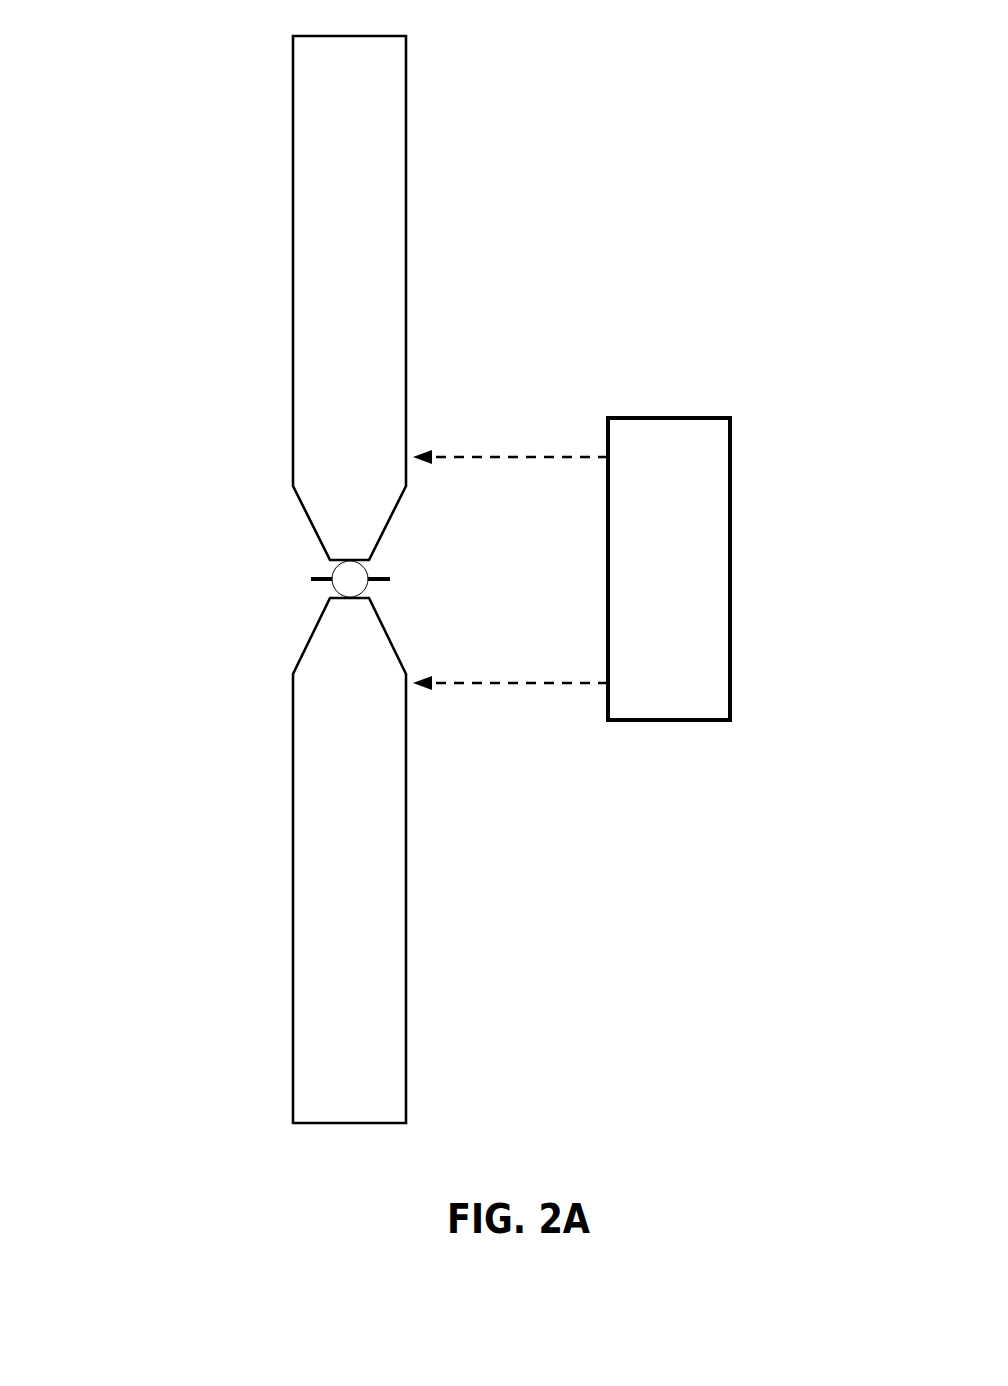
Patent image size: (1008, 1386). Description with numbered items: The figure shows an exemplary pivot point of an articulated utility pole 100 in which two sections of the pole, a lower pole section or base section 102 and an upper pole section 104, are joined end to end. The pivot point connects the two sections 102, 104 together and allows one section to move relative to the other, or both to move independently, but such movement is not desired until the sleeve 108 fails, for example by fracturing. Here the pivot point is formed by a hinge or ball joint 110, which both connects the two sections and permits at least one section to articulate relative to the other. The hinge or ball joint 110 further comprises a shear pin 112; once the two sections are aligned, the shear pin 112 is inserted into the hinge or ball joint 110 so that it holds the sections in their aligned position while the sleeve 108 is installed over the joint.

The pole 100 is at (257, 187).
The lower pole section or base section 102 is at (438, 965).
The upper pole section 104 is at (443, 250).
The sleeve 108 is at (743, 720).
The hinge or ball joint 110 is at (323, 571).
The shear pin 112 is at (305, 585).